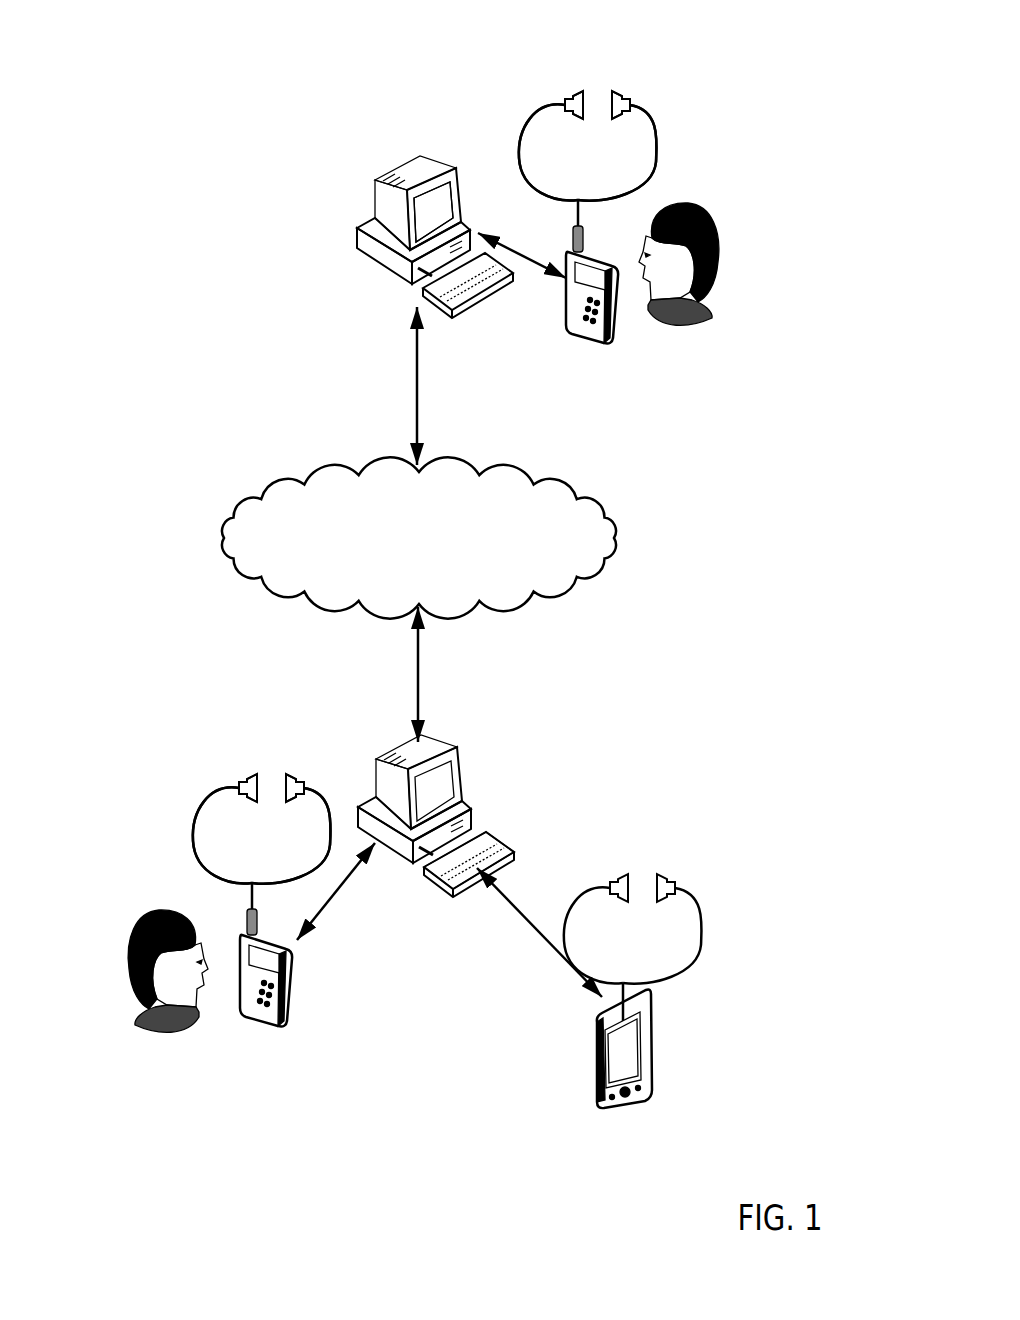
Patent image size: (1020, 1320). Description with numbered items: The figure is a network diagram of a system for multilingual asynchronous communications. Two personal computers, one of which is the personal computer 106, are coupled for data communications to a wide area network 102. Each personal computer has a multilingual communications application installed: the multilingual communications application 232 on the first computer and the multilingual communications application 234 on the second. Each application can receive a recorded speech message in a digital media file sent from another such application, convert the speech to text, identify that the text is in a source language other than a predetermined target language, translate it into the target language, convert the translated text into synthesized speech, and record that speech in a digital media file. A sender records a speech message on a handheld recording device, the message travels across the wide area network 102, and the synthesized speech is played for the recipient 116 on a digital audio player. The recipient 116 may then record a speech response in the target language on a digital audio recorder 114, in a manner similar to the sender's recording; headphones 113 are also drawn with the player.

The wide area network 102 is at (461, 550).
The personal computer 106 is at (277, 260).
The multilingual communications application 232 is at (417, 157).
The multilingual communications application 234 is at (488, 822).
The digital audio recorder 114 is at (313, 1121).
The recipient 116 is at (74, 1045).
The headphones 113 is at (694, 918).